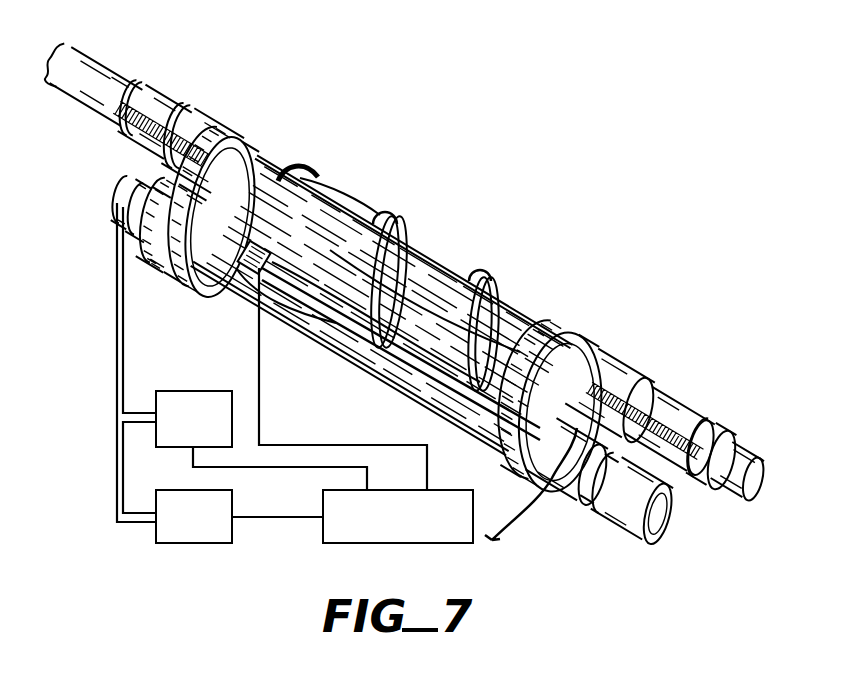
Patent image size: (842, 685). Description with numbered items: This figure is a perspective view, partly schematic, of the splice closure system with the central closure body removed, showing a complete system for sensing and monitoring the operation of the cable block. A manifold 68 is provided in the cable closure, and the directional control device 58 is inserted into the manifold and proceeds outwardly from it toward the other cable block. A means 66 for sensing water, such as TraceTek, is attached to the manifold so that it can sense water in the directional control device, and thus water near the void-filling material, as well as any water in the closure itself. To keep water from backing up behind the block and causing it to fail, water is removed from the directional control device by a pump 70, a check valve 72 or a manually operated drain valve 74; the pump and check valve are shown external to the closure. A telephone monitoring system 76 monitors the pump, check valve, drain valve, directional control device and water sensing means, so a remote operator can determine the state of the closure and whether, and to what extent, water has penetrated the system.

The directional control device 58 is at (365, 212).
The means for sensing water 66 is at (492, 280).
The manifold 68 is at (300, 176).
The pump 70 is at (233, 503).
The check valve 72 is at (220, 391).
The manually operated drain valve 74 is at (520, 500).
The telephone monitoring system 76 is at (478, 467).